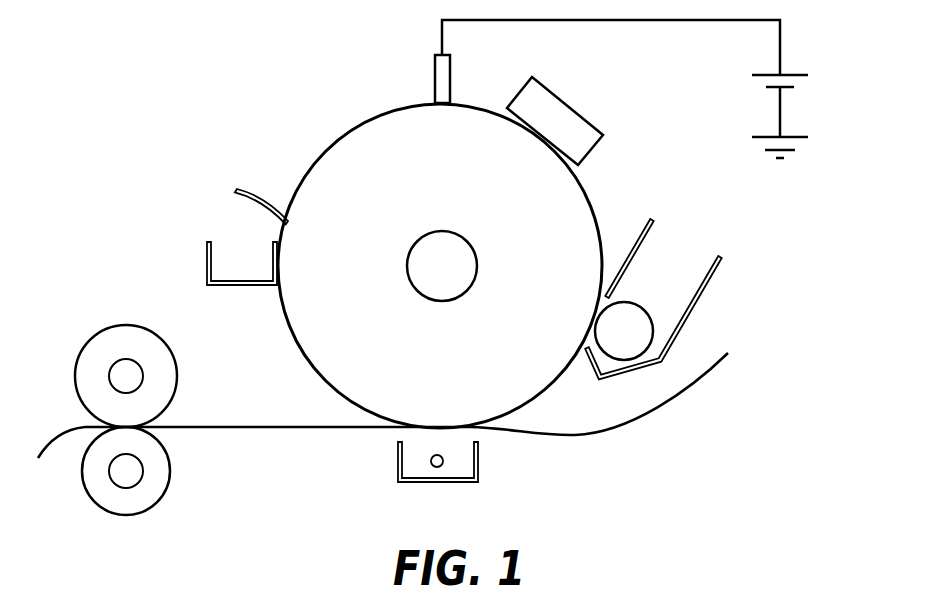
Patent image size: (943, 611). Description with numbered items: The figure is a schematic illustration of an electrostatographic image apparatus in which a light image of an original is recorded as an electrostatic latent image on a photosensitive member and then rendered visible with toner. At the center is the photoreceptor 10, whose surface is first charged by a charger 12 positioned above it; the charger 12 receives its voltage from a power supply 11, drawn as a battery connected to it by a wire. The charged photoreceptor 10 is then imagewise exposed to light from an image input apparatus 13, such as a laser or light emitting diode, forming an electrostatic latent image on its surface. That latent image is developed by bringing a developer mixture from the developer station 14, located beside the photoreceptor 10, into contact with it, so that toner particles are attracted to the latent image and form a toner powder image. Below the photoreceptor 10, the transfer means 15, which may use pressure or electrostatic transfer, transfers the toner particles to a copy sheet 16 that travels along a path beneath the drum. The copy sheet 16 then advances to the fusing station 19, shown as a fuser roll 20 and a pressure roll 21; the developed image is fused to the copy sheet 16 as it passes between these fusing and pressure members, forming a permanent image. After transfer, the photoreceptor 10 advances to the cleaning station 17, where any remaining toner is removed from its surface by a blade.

The photoreceptor 10 is at (590, 192).
The power supply 11 is at (780, 55).
The charger 12 is at (433, 80).
The image input apparatus 13 is at (567, 100).
The developer station 14 is at (674, 248).
The transfer means 15 is at (478, 458).
The copy sheet 16 is at (670, 410).
The cleaning station 17 is at (216, 204).
The fusing station 19 is at (146, 381).
The fuser roll 20 is at (178, 377).
The pressure roll 21 is at (170, 468).